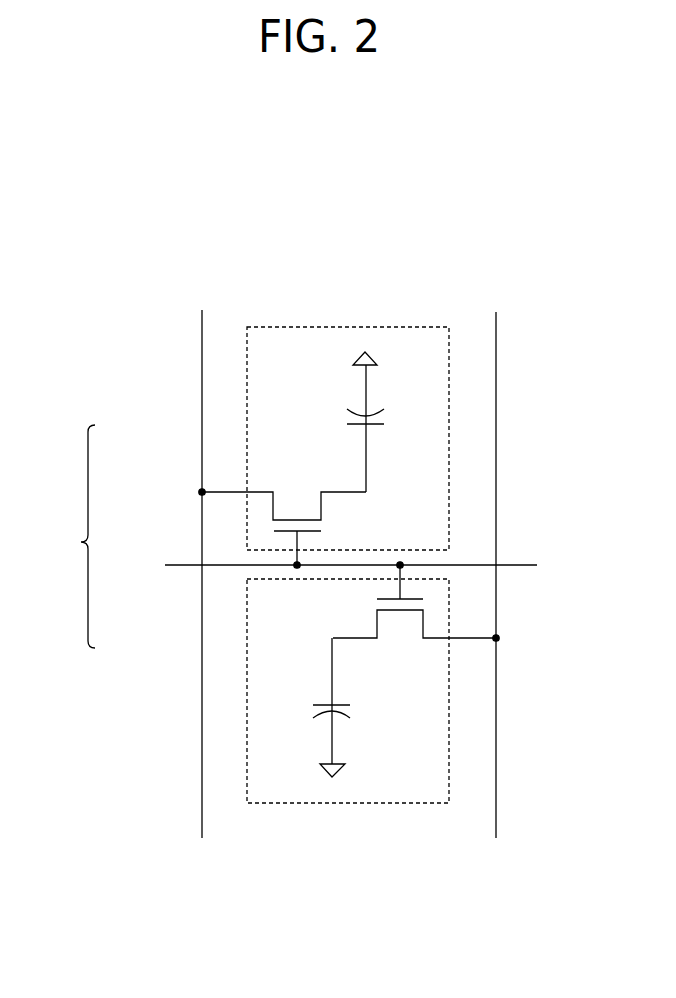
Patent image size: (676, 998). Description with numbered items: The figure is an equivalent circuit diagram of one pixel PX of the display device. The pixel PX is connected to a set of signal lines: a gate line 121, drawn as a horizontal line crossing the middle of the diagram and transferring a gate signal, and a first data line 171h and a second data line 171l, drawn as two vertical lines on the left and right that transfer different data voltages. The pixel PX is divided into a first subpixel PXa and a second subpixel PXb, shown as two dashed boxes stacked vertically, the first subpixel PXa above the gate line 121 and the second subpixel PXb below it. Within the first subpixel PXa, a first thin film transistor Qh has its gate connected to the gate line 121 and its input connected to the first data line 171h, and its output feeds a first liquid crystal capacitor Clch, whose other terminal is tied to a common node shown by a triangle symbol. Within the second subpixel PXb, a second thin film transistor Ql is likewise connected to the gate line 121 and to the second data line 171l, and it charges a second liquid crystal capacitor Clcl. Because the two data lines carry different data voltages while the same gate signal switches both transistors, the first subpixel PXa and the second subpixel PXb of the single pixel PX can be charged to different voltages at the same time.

The first data line 171h is at (201, 559).
The second data line 171l is at (496, 558).
The gate line 121 is at (370, 564).
The pixel PX is at (72, 536).
The first subpixel PXa is at (247, 436).
The second subpixel PXb is at (247, 637).
The first thin film transistor Qh is at (282, 516).
The second thin film transistor Ql is at (416, 613).
The first liquid crystal capacitor Clch is at (343, 422).
The second liquid crystal capacitor Clcl is at (350, 707).